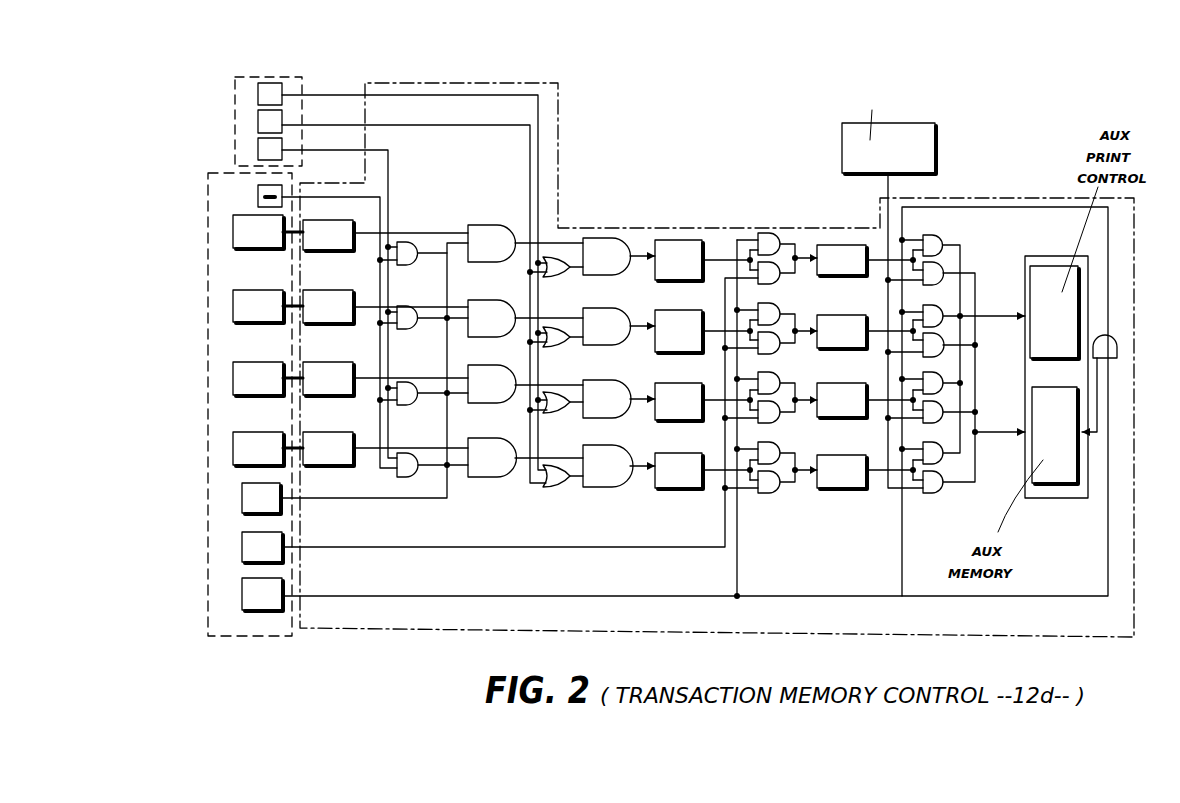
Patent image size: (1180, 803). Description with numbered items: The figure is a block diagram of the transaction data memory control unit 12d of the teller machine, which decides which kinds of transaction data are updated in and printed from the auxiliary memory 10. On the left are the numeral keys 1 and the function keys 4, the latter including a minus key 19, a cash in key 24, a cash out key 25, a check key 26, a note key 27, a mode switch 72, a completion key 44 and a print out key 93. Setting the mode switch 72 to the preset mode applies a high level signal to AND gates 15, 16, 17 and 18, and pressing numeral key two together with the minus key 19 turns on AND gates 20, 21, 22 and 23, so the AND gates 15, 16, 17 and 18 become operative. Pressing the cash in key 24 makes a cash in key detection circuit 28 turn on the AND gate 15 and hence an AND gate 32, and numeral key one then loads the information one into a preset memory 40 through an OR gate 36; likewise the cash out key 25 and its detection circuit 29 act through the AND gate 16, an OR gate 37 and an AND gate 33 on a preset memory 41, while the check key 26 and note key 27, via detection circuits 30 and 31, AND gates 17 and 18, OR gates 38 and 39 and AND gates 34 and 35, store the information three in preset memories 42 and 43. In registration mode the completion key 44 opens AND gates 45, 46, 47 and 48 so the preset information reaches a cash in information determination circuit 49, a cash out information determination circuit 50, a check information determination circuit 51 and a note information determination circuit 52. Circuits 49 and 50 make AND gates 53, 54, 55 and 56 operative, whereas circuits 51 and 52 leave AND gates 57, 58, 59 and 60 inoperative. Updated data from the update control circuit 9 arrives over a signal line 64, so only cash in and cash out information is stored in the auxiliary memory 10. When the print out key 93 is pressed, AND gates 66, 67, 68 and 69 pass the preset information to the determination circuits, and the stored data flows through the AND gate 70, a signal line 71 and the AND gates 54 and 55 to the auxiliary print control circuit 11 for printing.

The numeral keys 1 is at (290, 91).
The function keys 4 is at (252, 638).
The update control circuit 9 is at (928, 142).
The auxiliary memory 10 is at (1060, 470).
The auxiliary print control circuit 11 is at (1050, 282).
The transaction data memory control unit 12d is at (497, 90).
The AND gate 15 is at (484, 240).
The AND gate 16 is at (484, 315).
The AND gate 17 is at (484, 380).
The AND gate 18 is at (484, 453).
The minus key 19 is at (282, 190).
The AND gate 20 is at (404, 242).
The AND gate 21 is at (404, 306).
The AND gate 22 is at (404, 382).
The AND gate 23 is at (404, 453).
The cash in key 24 is at (248, 250).
The cash out key 25 is at (248, 324).
The check key 26 is at (248, 397).
The note key 27 is at (240, 464).
The cash in key detection circuit 28 is at (320, 252).
The cash out key detection circuit 29 is at (320, 325).
The check key detection circuit 30 is at (320, 397).
The note key detection circuit 31 is at (322, 466).
The AND gate 32 is at (600, 256).
The AND gate 33 is at (600, 326).
The AND gate 34 is at (600, 399).
The AND gate 35 is at (600, 466).
The OR gate 36 is at (556, 278).
The OR gate 37 is at (556, 348).
The OR gate 38 is at (556, 414).
The OR gate 39 is at (552, 488).
The preset memory 40 is at (682, 248).
The preset memory 41 is at (682, 322).
The preset memory 42 is at (682, 395).
The preset memory 43 is at (682, 462).
The completion key 44 is at (245, 546).
The AND gate 45 is at (776, 284).
The AND gate 46 is at (776, 354).
The AND gate 47 is at (777, 420).
The AND gate 48 is at (777, 494).
The cash in information determination circuit 49 is at (843, 250).
The cash out information determination circuit 50 is at (843, 328).
The check information determination circuit 51 is at (843, 396).
The note information determination circuit 52 is at (843, 466).
The AND gate 53 is at (942, 275).
The AND gate 54 is at (940, 245).
The AND gate 55 is at (936, 312).
The AND gate 56 is at (950, 348).
The AND gate 57 is at (940, 378).
The AND gate 58 is at (937, 424).
The AND gate 59 is at (940, 464).
The AND gate 60 is at (938, 494).
The signal line 64 is at (895, 190).
The AND gate 66 is at (772, 236).
The AND gate 67 is at (778, 308).
The AND gate 68 is at (778, 378).
The AND gate 69 is at (778, 448).
The AND gate 70 is at (1118, 347).
The signal line 71 is at (1013, 206).
The mode switch 72 is at (240, 498).
The print out key 93 is at (283, 586).